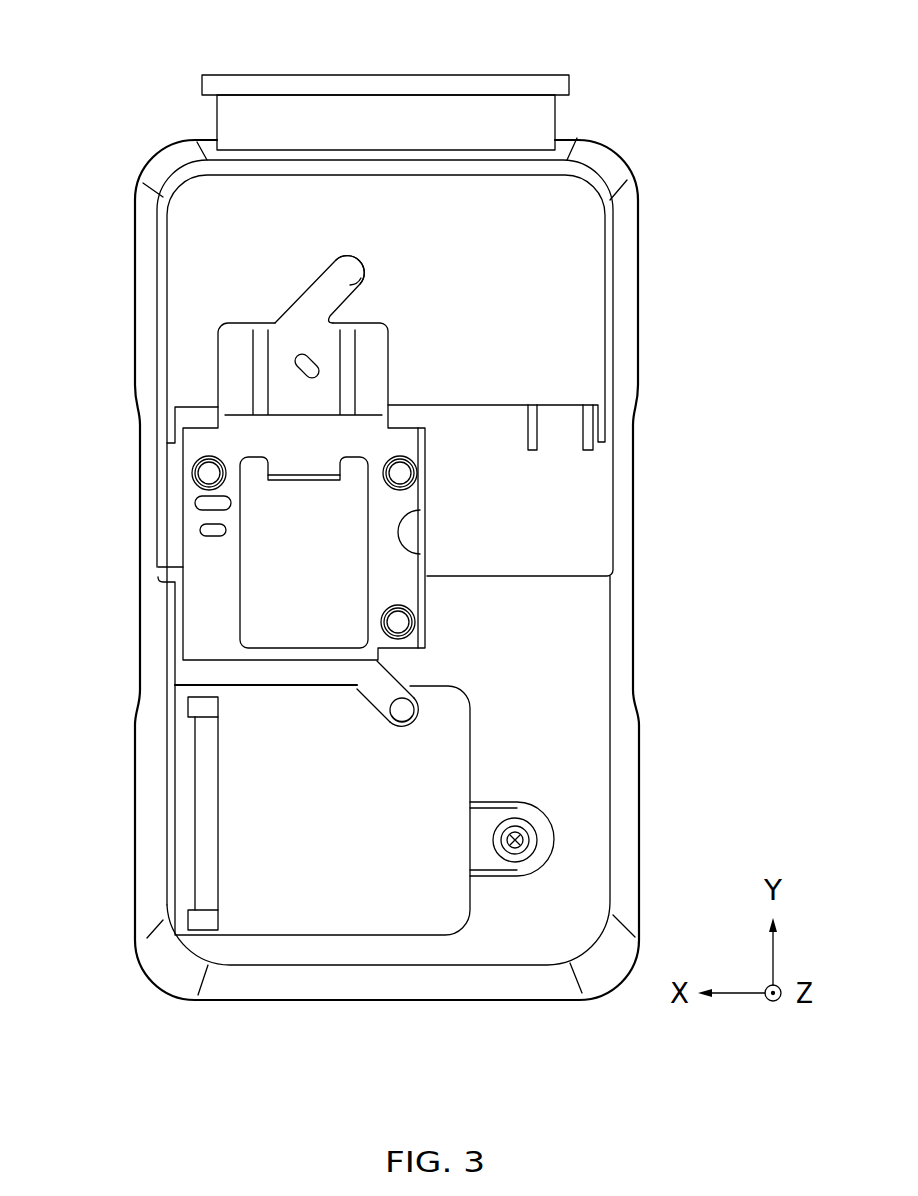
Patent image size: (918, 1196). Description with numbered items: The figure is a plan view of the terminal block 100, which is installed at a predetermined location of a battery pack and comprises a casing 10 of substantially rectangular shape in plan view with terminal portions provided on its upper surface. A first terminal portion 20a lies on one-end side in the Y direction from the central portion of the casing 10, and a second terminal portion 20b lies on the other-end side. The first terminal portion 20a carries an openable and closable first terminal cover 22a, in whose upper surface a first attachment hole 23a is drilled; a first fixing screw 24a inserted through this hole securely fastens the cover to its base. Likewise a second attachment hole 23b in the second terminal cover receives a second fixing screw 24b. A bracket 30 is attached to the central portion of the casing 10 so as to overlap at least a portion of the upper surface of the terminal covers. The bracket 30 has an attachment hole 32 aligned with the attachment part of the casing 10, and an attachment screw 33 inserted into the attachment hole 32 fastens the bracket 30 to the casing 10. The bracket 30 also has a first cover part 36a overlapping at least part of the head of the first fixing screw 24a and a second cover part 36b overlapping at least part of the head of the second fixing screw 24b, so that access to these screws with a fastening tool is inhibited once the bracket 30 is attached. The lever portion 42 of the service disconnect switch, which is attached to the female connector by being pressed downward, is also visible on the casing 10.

The terminal block 100 is at (405, 561).
The casing 10 is at (137, 800).
The first terminal portion 20a is at (353, 877).
The second terminal portion 20b is at (162, 152).
The first terminal cover 22a is at (297, 917).
The first attachment hole 23a is at (410, 725).
The second attachment hole 23b is at (372, 296).
The first fixing screw 24a is at (420, 718).
The second fixing screw 24b is at (365, 284).
The bracket 30 is at (413, 426).
The attachment hole 32 is at (197, 479).
The attachment screw 33 is at (210, 470).
The first cover part 36a is at (560, 744).
The second cover part 36b is at (525, 169).
The lever portion 42 is at (283, 560).